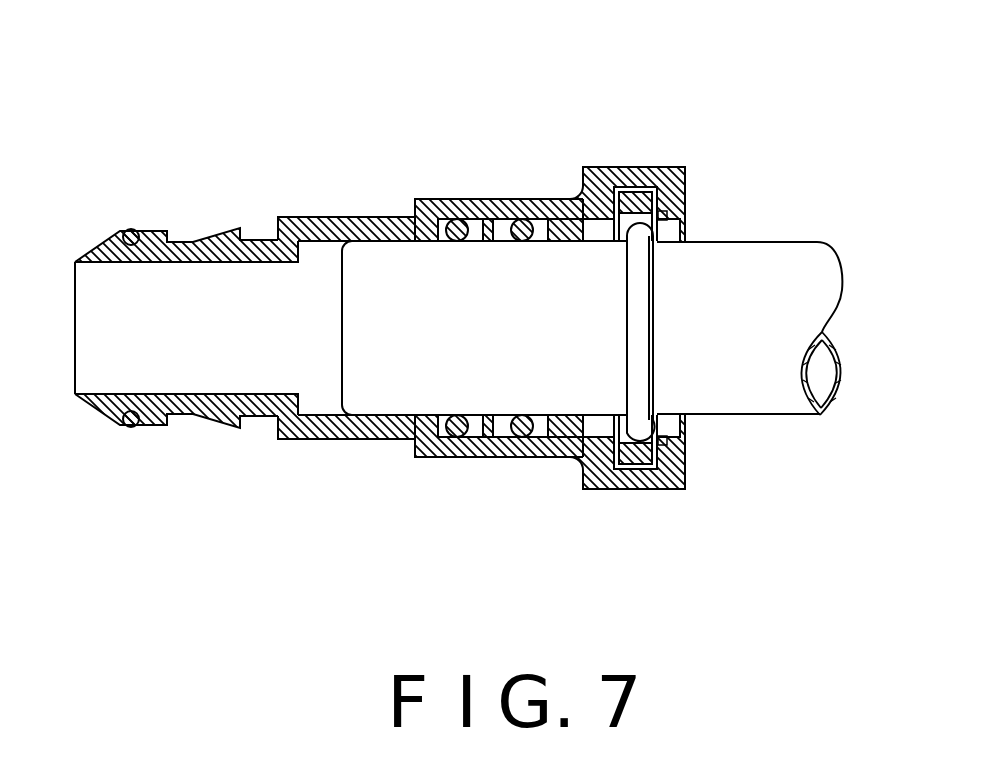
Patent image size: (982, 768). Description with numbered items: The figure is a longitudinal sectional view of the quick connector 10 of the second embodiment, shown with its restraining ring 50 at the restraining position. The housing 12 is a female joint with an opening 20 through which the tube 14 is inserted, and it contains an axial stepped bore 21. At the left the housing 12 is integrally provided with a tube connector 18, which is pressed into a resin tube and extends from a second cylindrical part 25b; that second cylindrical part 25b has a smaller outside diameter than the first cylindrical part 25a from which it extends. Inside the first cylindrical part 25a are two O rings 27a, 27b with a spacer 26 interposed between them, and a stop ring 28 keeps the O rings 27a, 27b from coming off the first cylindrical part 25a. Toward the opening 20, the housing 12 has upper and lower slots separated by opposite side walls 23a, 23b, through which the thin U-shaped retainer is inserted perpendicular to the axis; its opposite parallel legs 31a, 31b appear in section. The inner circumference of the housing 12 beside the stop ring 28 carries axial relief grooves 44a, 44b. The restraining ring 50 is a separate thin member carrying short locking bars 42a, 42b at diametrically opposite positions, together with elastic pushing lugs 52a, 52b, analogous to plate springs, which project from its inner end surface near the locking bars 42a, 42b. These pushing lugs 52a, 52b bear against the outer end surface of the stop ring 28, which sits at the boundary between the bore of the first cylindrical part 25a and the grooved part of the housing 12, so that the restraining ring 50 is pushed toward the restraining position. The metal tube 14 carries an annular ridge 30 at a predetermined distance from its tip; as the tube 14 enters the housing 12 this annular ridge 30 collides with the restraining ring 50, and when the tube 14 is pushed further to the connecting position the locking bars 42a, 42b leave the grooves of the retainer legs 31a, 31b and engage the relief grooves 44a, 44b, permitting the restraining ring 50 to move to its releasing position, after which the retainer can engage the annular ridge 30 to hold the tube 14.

The quick connector 10 is at (750, 113).
The housing 12 is at (517, 198).
The tube 14 is at (785, 258).
The tube connector 18 is at (268, 422).
The opening 20 is at (673, 425).
The axial stepped bore 21 is at (254, 342).
The side wall 23a is at (598, 493).
The side wall 23b is at (633, 165).
The first cylindrical part 25a is at (455, 450).
The second cylindrical part 25b is at (352, 440).
The spacer 26 is at (473, 202).
The O ring 27a is at (455, 244).
The O ring 27b is at (507, 202).
The stop ring 28 is at (522, 410).
The annular ridge 30 is at (643, 342).
The leg 31a is at (640, 452).
The leg 31b is at (650, 190).
The locking bar 42a is at (655, 465).
The locking bar 42b is at (665, 210).
The relief groove 44a is at (580, 440).
The relief groove 44b is at (583, 202).
The restraining ring 50 is at (628, 215).
The elastic pushing lug 52a is at (603, 423).
The elastic pushing lug 52b is at (605, 234).